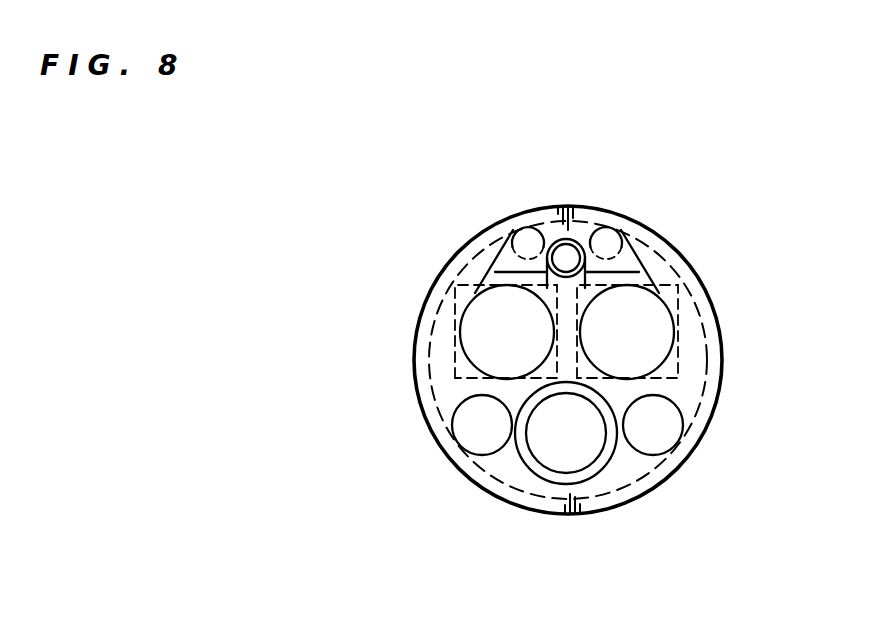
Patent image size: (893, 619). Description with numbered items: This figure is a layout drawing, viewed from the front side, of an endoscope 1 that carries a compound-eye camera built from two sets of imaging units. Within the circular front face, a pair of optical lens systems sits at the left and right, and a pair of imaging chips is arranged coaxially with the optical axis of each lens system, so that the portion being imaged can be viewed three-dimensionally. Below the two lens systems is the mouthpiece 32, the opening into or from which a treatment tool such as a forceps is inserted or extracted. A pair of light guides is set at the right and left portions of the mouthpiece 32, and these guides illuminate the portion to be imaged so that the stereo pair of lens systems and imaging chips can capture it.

The cable 1 is at (721, 311).
The mouthpiece 32 is at (570, 452).